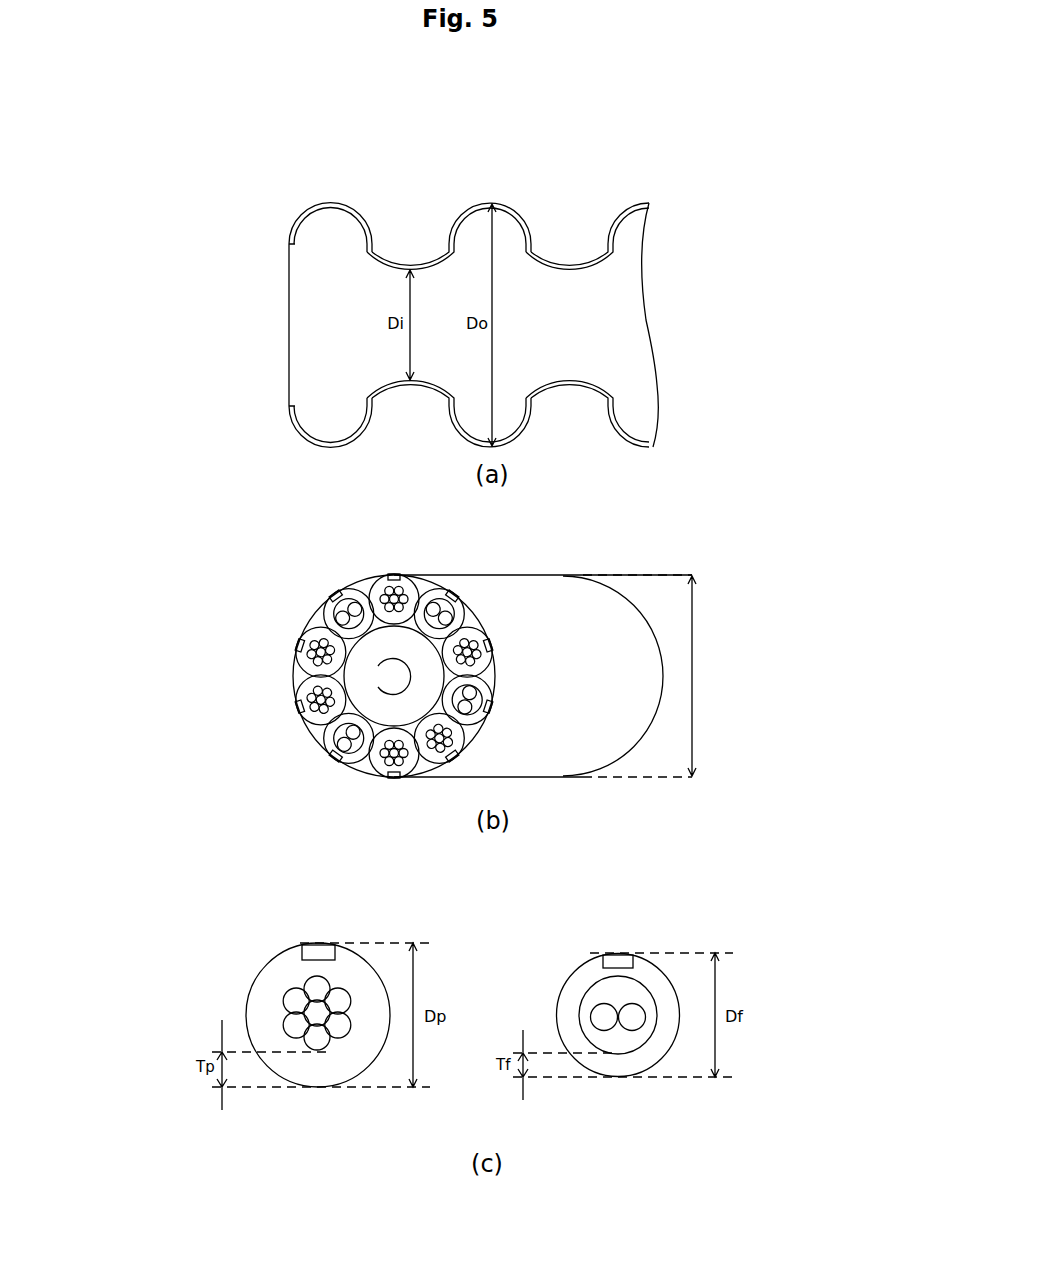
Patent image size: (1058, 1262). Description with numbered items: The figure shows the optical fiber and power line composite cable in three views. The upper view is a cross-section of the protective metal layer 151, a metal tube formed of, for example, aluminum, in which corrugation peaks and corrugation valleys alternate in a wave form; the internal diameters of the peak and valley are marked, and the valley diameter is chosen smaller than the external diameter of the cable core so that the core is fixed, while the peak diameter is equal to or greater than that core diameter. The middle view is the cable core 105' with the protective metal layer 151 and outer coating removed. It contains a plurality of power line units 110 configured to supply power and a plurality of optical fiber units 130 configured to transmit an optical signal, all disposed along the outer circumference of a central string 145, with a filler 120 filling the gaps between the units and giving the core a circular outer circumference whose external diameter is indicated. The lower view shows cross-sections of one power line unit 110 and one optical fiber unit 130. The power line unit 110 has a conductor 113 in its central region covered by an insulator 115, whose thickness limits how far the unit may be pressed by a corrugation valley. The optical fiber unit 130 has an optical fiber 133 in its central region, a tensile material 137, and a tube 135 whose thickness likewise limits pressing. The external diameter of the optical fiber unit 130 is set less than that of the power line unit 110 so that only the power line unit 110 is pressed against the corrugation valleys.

The protective metal layer 151 is at (559, 185).
The cable core 105' is at (559, 641).
The filler 120 is at (367, 582).
The central string 145 is at (392, 677).
The power line unit 110 is at (407, 580).
The conductor 113 is at (393, 598).
The insulator 115 is at (382, 580).
The optical fiber unit 130 is at (345, 590).
The optical fiber 133 is at (335, 606).
The tube 135 is at (326, 607).
The tensile material 137 is at (344, 610).